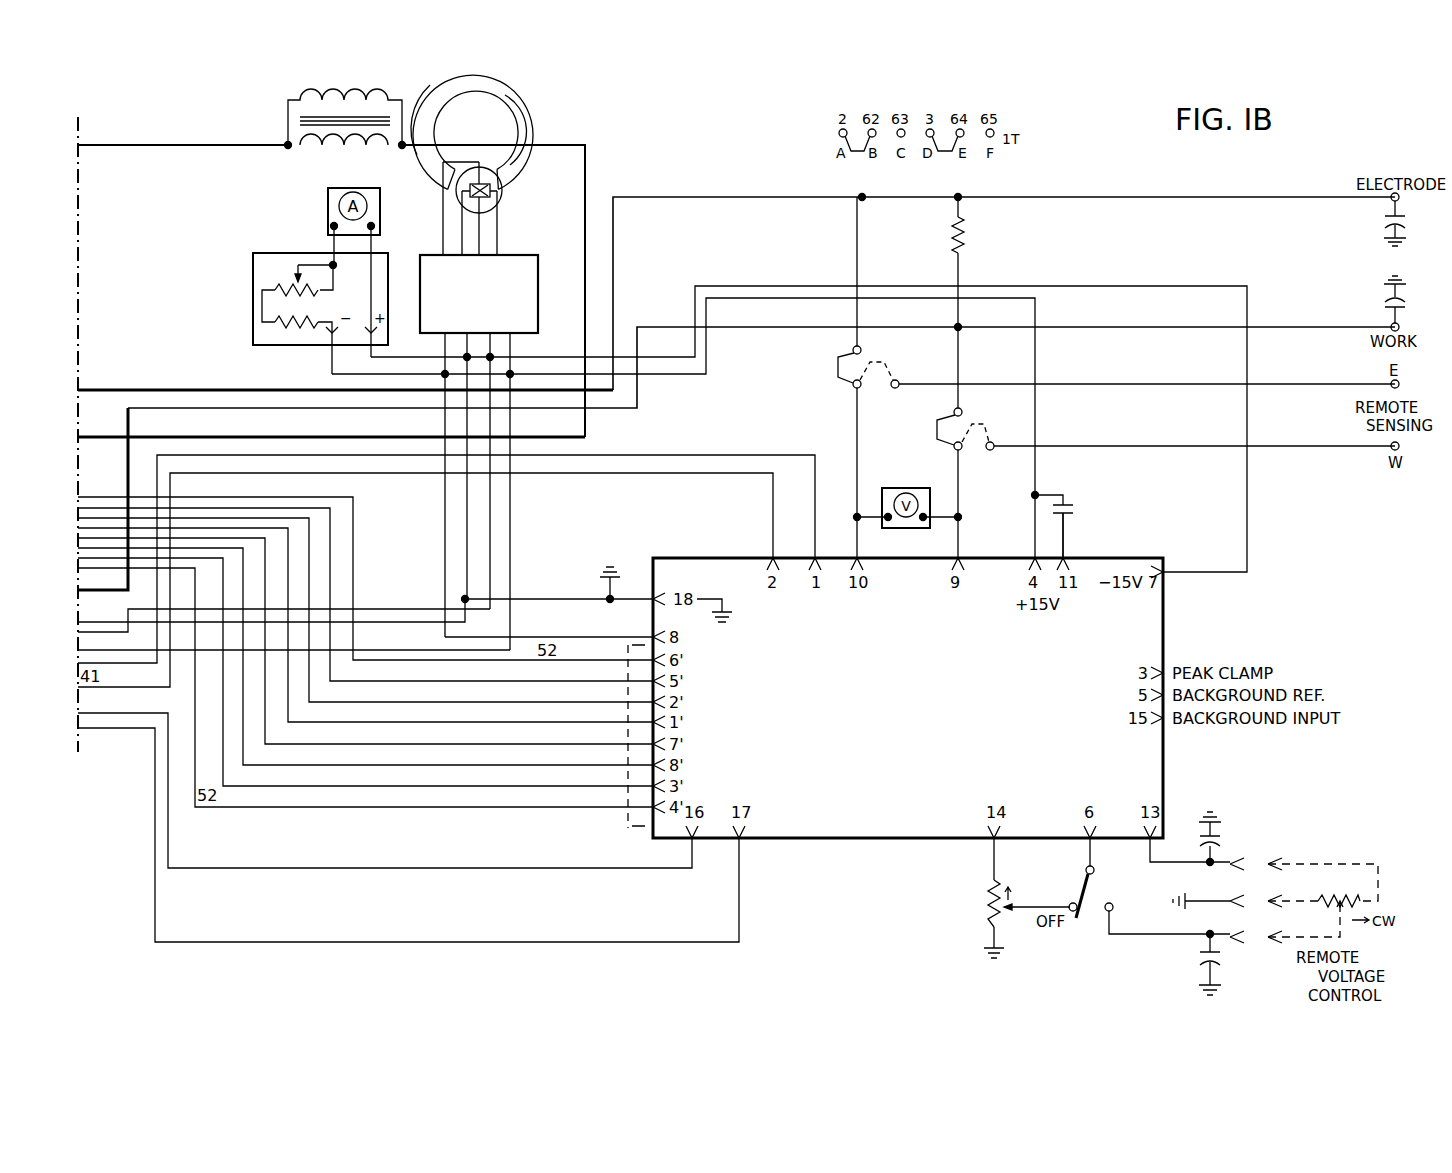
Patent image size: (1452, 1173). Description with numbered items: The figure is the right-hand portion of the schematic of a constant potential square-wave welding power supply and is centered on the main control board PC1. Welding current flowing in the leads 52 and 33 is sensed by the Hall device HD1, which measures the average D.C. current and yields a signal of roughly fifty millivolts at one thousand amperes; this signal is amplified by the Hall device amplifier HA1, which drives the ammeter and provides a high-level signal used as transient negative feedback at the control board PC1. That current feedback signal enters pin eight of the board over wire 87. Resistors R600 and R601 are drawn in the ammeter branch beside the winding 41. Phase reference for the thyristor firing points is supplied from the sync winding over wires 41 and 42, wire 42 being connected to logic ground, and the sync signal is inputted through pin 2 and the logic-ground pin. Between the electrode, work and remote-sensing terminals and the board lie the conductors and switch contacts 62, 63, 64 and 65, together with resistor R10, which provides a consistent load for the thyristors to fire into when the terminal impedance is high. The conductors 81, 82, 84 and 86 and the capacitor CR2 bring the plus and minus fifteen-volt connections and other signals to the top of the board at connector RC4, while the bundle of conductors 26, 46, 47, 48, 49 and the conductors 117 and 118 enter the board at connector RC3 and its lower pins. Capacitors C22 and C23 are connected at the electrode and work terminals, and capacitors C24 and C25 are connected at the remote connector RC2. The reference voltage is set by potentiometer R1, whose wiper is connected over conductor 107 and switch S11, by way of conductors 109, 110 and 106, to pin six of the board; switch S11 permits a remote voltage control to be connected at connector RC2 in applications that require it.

The conductor lead 52 is at (185, 135).
The sync wire 41 is at (345, 117).
The conductor 33 is at (331, 279).
The conductor 82 is at (446, 549).
The conductor 86 is at (809, 418).
The conductor 81 is at (696, 425).
The conductor 84 is at (1076, 535).
The sync wire 42 is at (365, 594).
The current feedback wire 87 is at (549, 626).
The conductor 48 is at (365, 594).
The conductor 26 is at (365, 610).
The conductor 46 is at (365, 625).
The conductor 47 is at (365, 641).
The control board pin 2 is at (365, 656).
The conductor 49 is at (365, 672).
The conductor 117 is at (385, 790).
The conductor 118 is at (408, 837).
The switch contact conductor 62 is at (868, 377).
The switch contact 63 is at (1116, 367).
The switch contact 64 is at (946, 442).
The switch contact 65 is at (1178, 436).
The conductor 109 is at (980, 859).
The conductor 110 is at (1083, 852).
The conductor 106 is at (1176, 852).
The conductor 107 is at (1037, 898).
The potentiometer R600 is at (275, 284).
The resistor R601 is at (275, 325).
The load resistor R10 is at (970, 262).
The reference potentiometer R1 is at (968, 913).
The Hall device HD1 is at (472, 132).
The Hall device amplifier HA1 is at (479, 294).
The main control board PC1 is at (908, 698).
The capacitor CR2 is at (1072, 526).
The capacitor C22 is at (1377, 219).
The capacitor C23 is at (1377, 303).
The capacitor C24 is at (1193, 964).
The capacitor C25 is at (1225, 837).
The remote connector RC2 is at (1246, 914).
The connector RC3 is at (626, 749).
The connector RC4 is at (749, 543).
The remote voltage control switch S11 is at (1103, 895).